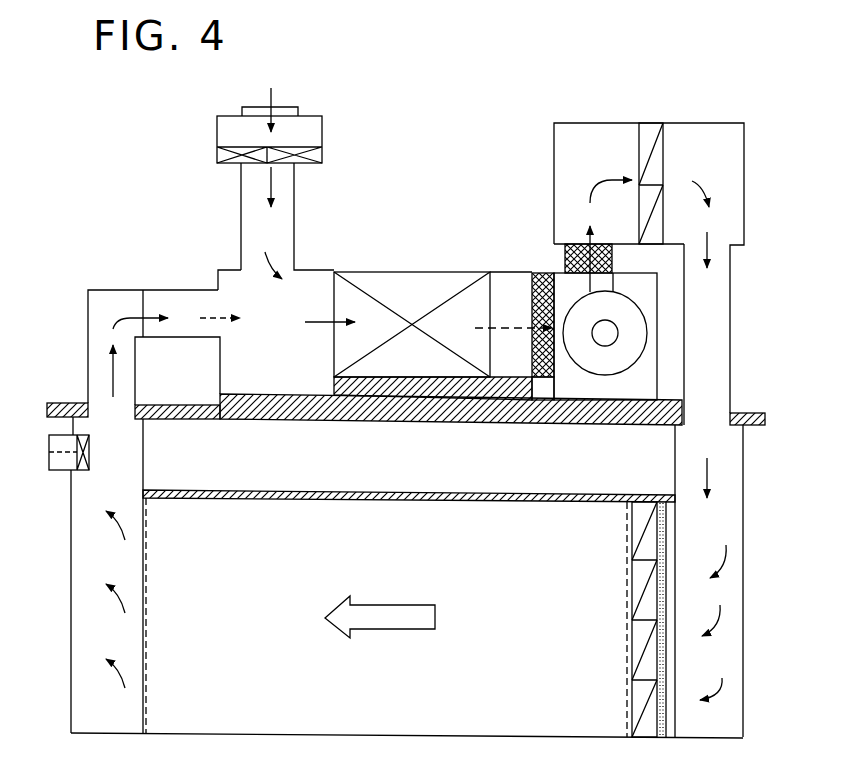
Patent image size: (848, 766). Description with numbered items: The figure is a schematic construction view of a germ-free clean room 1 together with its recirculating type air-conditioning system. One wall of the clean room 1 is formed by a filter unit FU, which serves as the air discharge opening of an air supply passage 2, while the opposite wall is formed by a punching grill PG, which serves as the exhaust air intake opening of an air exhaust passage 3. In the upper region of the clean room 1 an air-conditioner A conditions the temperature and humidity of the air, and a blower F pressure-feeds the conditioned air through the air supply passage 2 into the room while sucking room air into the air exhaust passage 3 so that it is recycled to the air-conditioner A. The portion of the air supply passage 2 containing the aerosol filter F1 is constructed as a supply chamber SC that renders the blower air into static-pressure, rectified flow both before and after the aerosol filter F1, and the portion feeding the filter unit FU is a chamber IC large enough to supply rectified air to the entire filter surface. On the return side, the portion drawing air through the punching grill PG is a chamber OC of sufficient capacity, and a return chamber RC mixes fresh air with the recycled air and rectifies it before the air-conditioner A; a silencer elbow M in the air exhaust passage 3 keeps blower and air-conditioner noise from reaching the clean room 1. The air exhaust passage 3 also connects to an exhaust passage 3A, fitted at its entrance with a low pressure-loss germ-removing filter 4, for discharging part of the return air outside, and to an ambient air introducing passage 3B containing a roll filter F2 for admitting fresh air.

The germ-free clean room 1 is at (407, 667).
The air supply passage 2 is at (717, 528).
The air exhaust passage 3 is at (93, 605).
The exhaust passage 3A is at (60, 472).
The ambient air introducing passage 3B is at (297, 217).
The germ-removing filter 4 is at (45, 447).
The air-conditioner A is at (412, 280).
The blower F is at (640, 340).
The aerosol filter F1 is at (661, 158).
The roll filter F2 is at (303, 142).
The filter unit FU is at (630, 650).
The chamber IC is at (717, 655).
The silencer elbow M is at (107, 298).
The chamber OC is at (100, 673).
The punching grill PG is at (145, 688).
The return chamber RC is at (232, 272).
The supply chamber SC is at (727, 177).